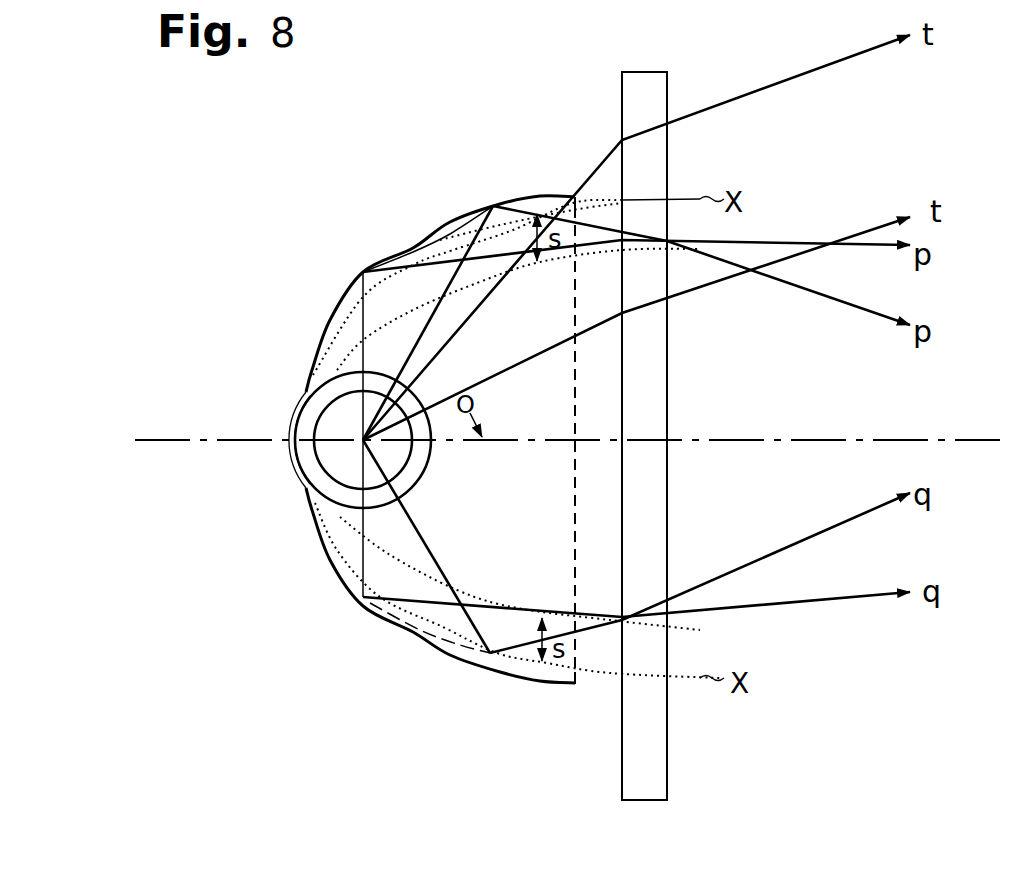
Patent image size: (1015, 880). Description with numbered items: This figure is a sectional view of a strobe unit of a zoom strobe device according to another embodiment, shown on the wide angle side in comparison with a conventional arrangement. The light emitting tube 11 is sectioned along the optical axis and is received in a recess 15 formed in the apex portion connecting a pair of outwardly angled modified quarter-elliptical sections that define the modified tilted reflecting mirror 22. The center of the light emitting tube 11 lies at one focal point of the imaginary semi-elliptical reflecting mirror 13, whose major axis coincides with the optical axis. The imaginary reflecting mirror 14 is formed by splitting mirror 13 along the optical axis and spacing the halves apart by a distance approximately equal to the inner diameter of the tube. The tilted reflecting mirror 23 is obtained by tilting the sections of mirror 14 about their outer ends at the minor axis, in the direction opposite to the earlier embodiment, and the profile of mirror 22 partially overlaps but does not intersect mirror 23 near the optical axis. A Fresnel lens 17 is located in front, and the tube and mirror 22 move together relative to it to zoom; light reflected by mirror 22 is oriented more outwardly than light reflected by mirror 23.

The light emitting tube 11 is at (342, 423).
The imaginary semi-elliptical reflecting mirror 13 is at (477, 283).
The imaginary reflecting mirror 14 is at (485, 227).
The recess 15 is at (287, 467).
The Fresnel lens 17 is at (622, 162).
The modified tilted reflecting mirror 22 is at (360, 272).
The tilted reflecting mirror 23 is at (412, 250).